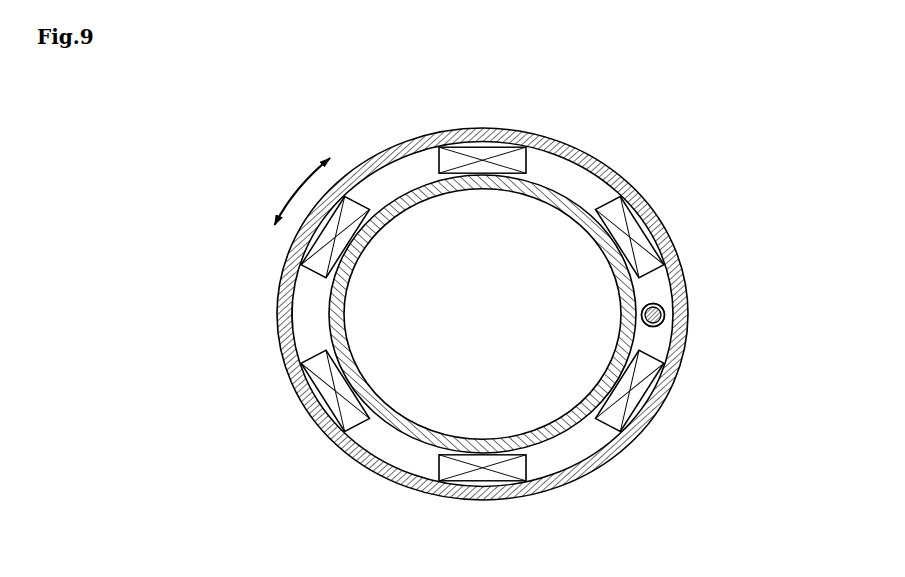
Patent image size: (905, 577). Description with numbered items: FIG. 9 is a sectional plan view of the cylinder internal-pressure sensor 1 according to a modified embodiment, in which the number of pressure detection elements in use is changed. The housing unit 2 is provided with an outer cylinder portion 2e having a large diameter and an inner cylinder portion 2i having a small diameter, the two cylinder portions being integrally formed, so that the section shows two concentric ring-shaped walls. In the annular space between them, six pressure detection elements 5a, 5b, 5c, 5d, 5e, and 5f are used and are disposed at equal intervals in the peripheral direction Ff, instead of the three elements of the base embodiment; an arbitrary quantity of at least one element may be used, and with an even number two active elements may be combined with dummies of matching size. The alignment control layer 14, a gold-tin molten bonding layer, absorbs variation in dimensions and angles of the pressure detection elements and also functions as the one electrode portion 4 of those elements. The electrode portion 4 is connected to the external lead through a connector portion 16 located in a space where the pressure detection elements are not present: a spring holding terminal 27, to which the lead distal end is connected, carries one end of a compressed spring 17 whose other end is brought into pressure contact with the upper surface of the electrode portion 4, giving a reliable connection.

The cylinder internal-pressure sensor 1 is at (687, 180).
The housing unit 2 is at (417, 494).
The outer cylinder portion 2e is at (388, 147).
The inner cylinder portion 2i is at (393, 430).
The electrode portion 4 is at (570, 180).
The pressure detection element 5a is at (300, 243).
The pressure detection element 5b is at (483, 150).
The pressure detection element 5c is at (660, 232).
The pressure detection element 5d is at (658, 410).
The pressure detection element 5e is at (526, 468).
The pressure detection element 5f is at (305, 406).
The alignment control layer 14 is at (302, 335).
The connector portion 16 is at (661, 333).
The spring 17 is at (672, 310).
The spring holding terminal 27 is at (665, 318).
The peripheral direction Ff is at (290, 190).